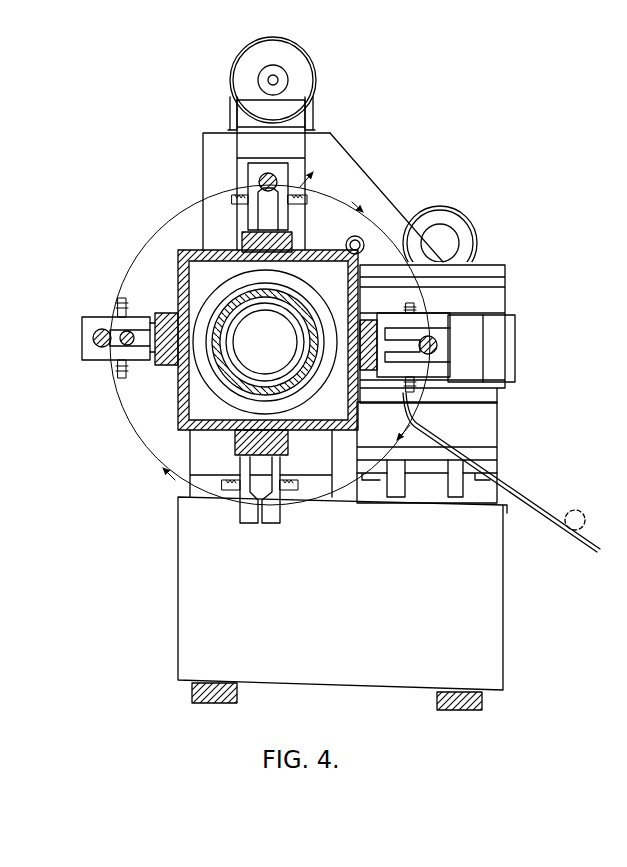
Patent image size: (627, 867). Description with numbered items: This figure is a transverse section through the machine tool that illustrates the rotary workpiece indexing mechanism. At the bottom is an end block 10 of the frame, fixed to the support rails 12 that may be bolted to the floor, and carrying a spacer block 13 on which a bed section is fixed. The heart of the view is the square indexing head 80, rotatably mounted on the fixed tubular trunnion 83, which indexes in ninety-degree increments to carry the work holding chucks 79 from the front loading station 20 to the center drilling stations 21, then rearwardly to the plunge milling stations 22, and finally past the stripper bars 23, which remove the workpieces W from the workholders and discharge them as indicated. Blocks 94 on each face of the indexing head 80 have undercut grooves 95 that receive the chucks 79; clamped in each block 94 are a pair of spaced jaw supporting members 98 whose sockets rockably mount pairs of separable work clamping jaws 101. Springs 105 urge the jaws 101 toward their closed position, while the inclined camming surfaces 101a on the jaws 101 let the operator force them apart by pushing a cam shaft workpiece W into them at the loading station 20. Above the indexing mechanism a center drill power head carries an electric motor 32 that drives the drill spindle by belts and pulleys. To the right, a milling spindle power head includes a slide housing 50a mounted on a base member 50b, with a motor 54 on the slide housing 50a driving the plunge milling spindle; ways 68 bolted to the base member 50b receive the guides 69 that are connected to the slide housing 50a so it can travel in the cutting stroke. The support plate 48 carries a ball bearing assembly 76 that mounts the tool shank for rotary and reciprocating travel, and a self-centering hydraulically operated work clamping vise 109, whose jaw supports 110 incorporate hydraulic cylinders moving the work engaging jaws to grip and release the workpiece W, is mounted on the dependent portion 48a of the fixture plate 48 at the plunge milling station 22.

The end block 10 is at (487, 597).
The support rails 12 is at (483, 700).
The spacer block 13 is at (195, 490).
The front loading station 20 is at (92, 366).
The center drilling stations 21 is at (313, 172).
The plunge milling stations 22 is at (455, 350).
The stripper bars 23 is at (413, 425).
The electric motor 32 is at (303, 72).
The support plate 48 is at (353, 177).
The dependent portion of fixture plate 48a is at (505, 282).
The slide housing 50a is at (487, 430).
The base member 50b is at (428, 498).
The motor 54 is at (452, 223).
The ways 68 is at (395, 493).
The guides 69 is at (377, 477).
The ball bearing assembly 76 is at (360, 240).
The work holding chucks 79 is at (290, 212).
The indexing head 80 is at (185, 432).
The tubular trunnion 83 is at (227, 377).
The blocks 94 is at (293, 238).
The undercut grooves 95 is at (157, 360).
The jaw supporting members 98 is at (157, 316).
The work clamping jaws 101 is at (250, 212).
The inclined camming surfaces 101a is at (97, 328).
The springs 105 is at (283, 490).
The work clamping vise 109 is at (522, 322).
The jaw supports 110 is at (497, 370).
The workpiece W is at (260, 180).